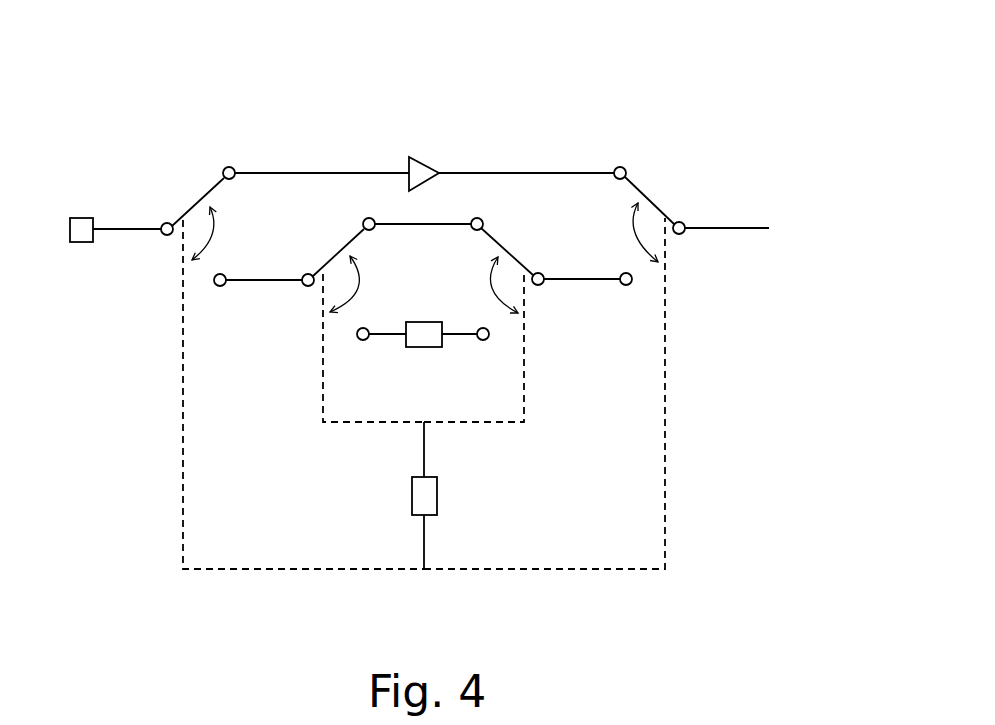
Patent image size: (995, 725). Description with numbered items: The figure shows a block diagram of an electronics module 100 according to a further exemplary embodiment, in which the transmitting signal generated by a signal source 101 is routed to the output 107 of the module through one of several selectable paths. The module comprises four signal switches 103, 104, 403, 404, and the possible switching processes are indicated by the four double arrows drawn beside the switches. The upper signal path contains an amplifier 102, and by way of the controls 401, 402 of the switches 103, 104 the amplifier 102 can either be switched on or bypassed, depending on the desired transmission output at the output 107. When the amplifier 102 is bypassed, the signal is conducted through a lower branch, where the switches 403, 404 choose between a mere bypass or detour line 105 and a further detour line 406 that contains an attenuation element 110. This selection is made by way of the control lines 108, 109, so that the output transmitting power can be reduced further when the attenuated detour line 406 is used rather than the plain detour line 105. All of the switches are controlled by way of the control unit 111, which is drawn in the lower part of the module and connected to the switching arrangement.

The electronics module 100 is at (731, 143).
The signal source 101 is at (78, 243).
The amplifier 102 is at (428, 160).
The signal switch 103 is at (200, 203).
The signal switch 104 is at (645, 201).
The detour line 105 is at (432, 223).
The output 107 is at (722, 232).
The control line 108 is at (343, 424).
The control line 109 is at (527, 394).
The attenuation element 110 is at (423, 349).
The control unit 111 is at (437, 495).
The control 401 is at (295, 570).
The control 402 is at (525, 570).
The signal switch 403 is at (338, 258).
The signal switch 404 is at (503, 253).
The detour line 406 is at (389, 337).